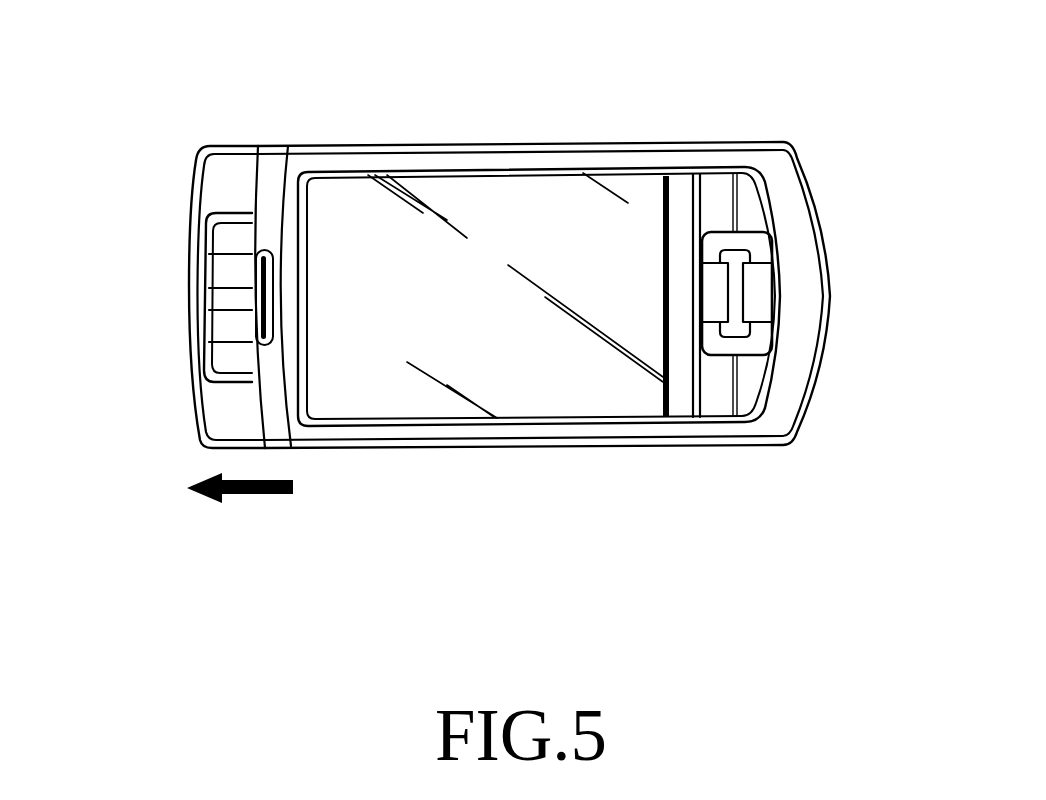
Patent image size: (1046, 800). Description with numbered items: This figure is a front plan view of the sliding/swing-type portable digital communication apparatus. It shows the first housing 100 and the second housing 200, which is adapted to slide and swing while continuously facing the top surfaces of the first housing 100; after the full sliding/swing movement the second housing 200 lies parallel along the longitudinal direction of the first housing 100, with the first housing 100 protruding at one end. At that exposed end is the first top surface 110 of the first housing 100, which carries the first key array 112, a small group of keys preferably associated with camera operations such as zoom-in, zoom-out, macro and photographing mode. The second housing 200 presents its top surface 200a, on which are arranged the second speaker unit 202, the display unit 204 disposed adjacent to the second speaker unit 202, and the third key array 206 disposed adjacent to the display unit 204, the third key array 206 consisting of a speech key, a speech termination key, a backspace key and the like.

The first housing 100 is at (168, 296).
The first top surface 110 is at (268, 137).
The first key array 112 is at (217, 233).
The second housing 200 is at (356, 131).
The top surface of the second housing 200a is at (618, 160).
The second speaker unit 202 is at (272, 318).
The display unit 204 is at (502, 197).
The third key array 206 is at (750, 193).